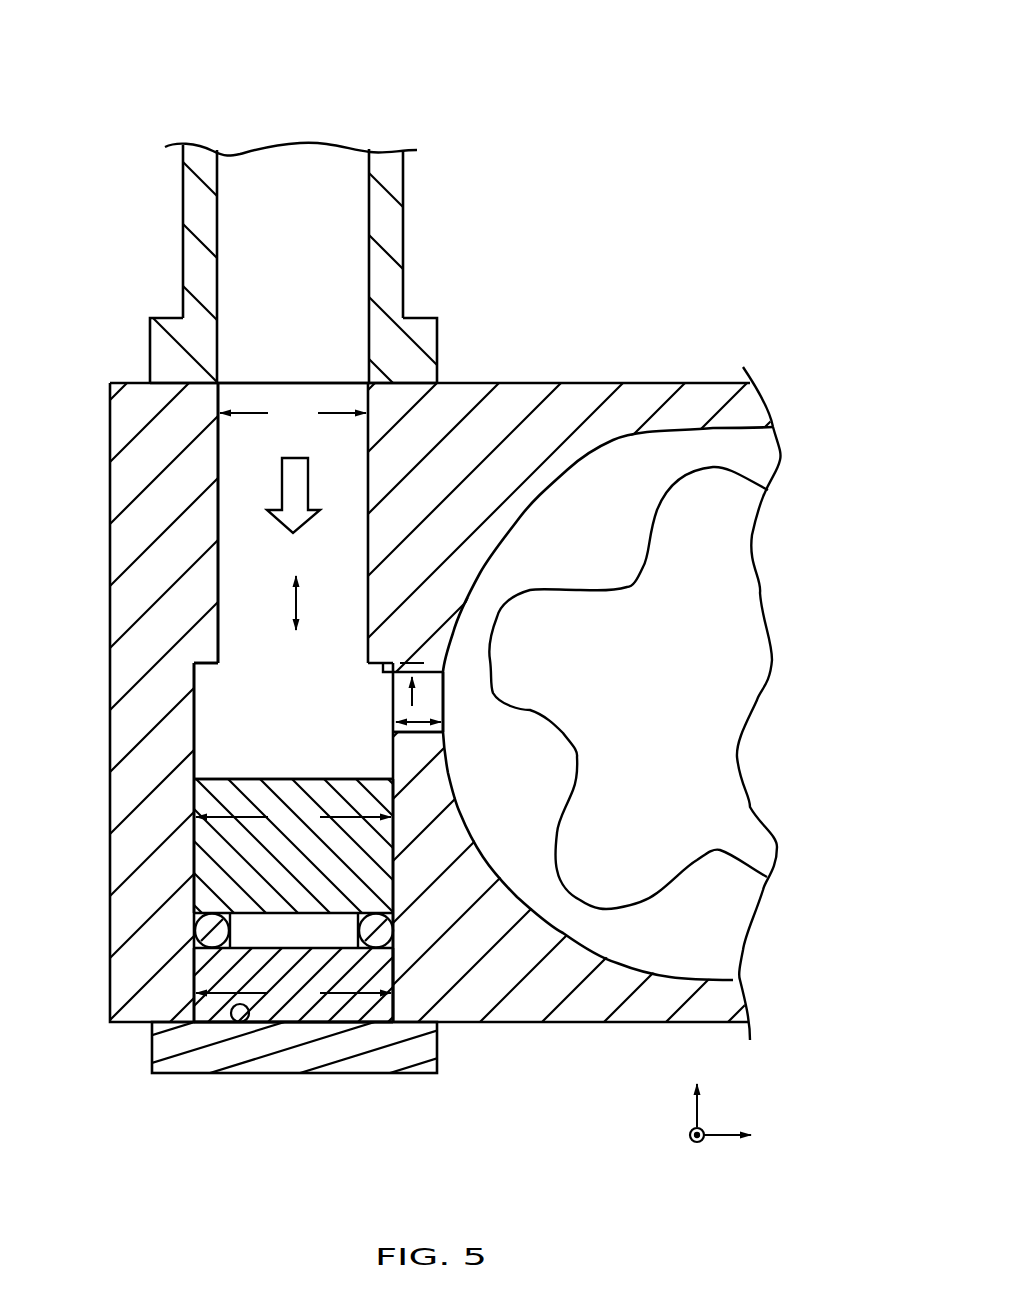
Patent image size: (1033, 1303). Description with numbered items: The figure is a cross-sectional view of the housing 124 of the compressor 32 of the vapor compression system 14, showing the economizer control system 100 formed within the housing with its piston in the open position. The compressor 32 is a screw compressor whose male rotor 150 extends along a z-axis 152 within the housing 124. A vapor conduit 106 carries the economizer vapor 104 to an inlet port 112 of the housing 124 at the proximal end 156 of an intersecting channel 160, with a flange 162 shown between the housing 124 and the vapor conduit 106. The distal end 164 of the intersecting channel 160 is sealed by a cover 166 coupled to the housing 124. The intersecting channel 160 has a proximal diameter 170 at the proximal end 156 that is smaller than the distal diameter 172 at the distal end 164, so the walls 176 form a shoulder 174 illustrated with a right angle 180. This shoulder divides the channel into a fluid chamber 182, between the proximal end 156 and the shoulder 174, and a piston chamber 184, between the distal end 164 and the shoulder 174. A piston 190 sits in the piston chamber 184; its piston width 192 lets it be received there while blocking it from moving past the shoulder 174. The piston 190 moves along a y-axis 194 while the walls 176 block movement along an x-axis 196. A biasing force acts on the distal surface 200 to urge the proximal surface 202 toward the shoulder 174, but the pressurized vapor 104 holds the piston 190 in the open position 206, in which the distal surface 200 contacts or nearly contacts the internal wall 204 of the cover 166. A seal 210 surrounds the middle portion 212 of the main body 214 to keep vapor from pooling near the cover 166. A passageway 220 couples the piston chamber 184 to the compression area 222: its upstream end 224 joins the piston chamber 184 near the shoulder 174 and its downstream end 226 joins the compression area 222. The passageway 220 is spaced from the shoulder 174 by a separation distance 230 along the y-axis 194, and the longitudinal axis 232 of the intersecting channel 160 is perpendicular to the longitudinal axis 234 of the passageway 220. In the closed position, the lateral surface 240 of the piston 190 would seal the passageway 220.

The vapor compression system 14 is at (724, 36).
The economizer control system 100 is at (622, 112).
The compressor 32 is at (670, 162).
The vapor conduit 106 is at (408, 231).
The flange 162 is at (444, 326).
The proximal end 156 is at (357, 383).
The inlet port 112 is at (254, 382).
The housing 124 is at (97, 482).
The proximal diameter 170 is at (293, 413).
The fluid chamber 182 is at (268, 463).
The vapor 104 is at (310, 483).
The intersecting channel 160 is at (216, 577).
The longitudinal axis of the intersecting channel 232 is at (295, 606).
The separation distance 230 is at (412, 657).
The passageway 220 is at (434, 665).
The right angle 180 is at (390, 669).
The piston chamber 184 is at (260, 705).
The shoulder 174 is at (200, 673).
The walls 176 is at (194, 735).
The proximal surface 202 is at (295, 779).
The upstream end 224 is at (406, 736).
The downstream end 226 is at (441, 742).
The longitudinal axis of the passageway 234 is at (418, 723).
The lateral surface 240 is at (394, 848).
The male rotor 150 is at (709, 704).
The compression area 222 is at (712, 927).
The piston 190 is at (236, 853).
The open position 206 is at (193, 844).
The piston width 192 is at (293, 817).
The middle portion 212 is at (200, 912).
The seal 210 is at (386, 940).
The main body 214 is at (267, 933).
The distal diameter 172 is at (293, 995).
The distal end 164 is at (207, 1013).
The cover 166 is at (406, 1075).
The internal wall 204 is at (233, 1019).
The distal surface 200 is at (275, 1023).
The z-axis 152 is at (692, 1141).
The y-axis 194 is at (697, 1108).
The x-axis 196 is at (722, 1136).